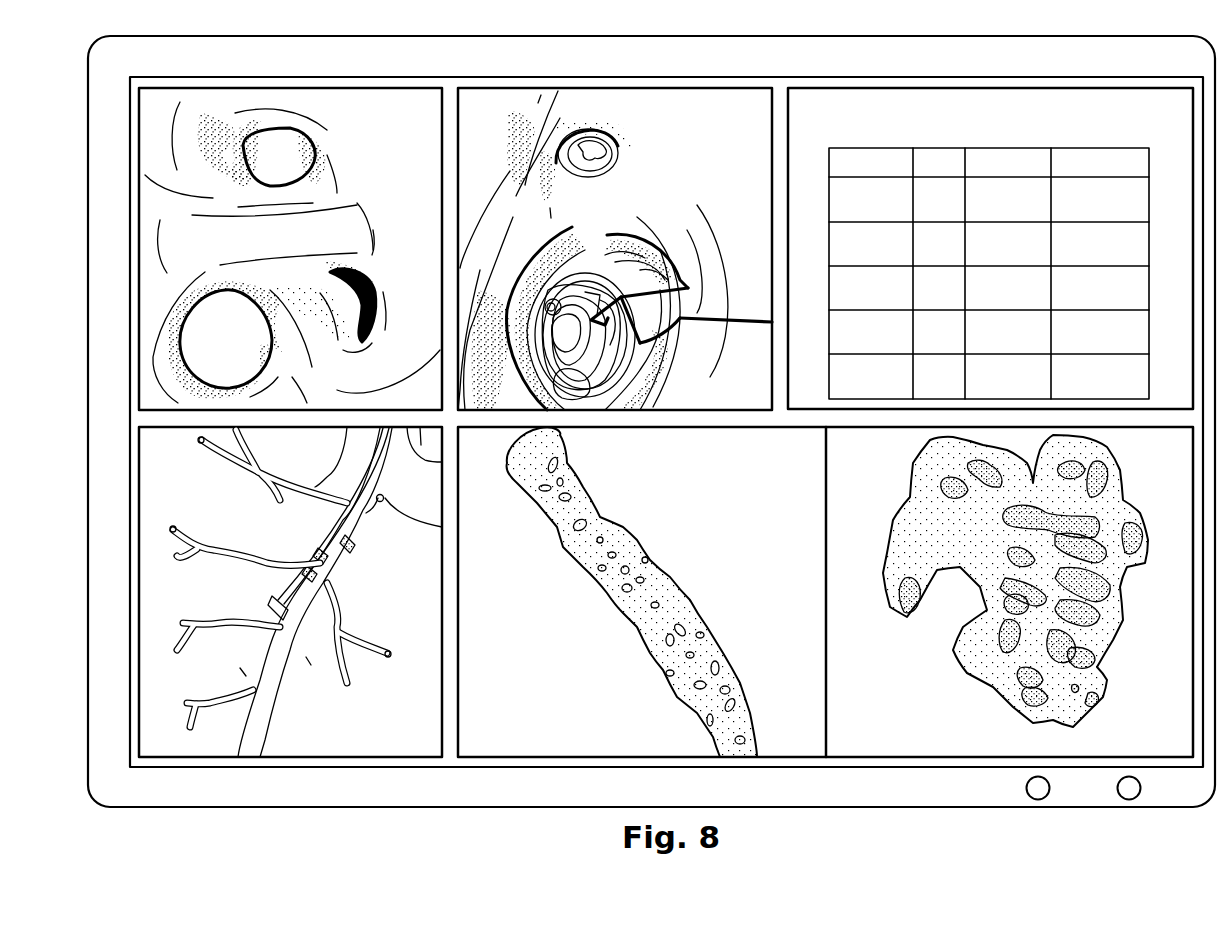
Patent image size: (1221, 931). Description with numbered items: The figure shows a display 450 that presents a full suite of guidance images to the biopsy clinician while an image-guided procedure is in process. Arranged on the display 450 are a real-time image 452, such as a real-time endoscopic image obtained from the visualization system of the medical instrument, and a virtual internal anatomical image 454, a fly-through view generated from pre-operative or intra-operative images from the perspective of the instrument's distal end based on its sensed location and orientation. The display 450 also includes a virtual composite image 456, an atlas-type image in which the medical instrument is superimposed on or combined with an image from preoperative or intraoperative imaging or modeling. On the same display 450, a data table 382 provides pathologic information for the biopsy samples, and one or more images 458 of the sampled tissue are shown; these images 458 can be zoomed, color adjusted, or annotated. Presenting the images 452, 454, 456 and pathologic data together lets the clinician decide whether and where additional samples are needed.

The display 450 is at (233, 808).
The real-time image 452 is at (417, 139).
The virtual internal anatomical image 454 is at (746, 137).
The data table 382 is at (1144, 132).
The virtual composite image 456 is at (189, 490).
The images of the sampled tissue 458 is at (732, 480).